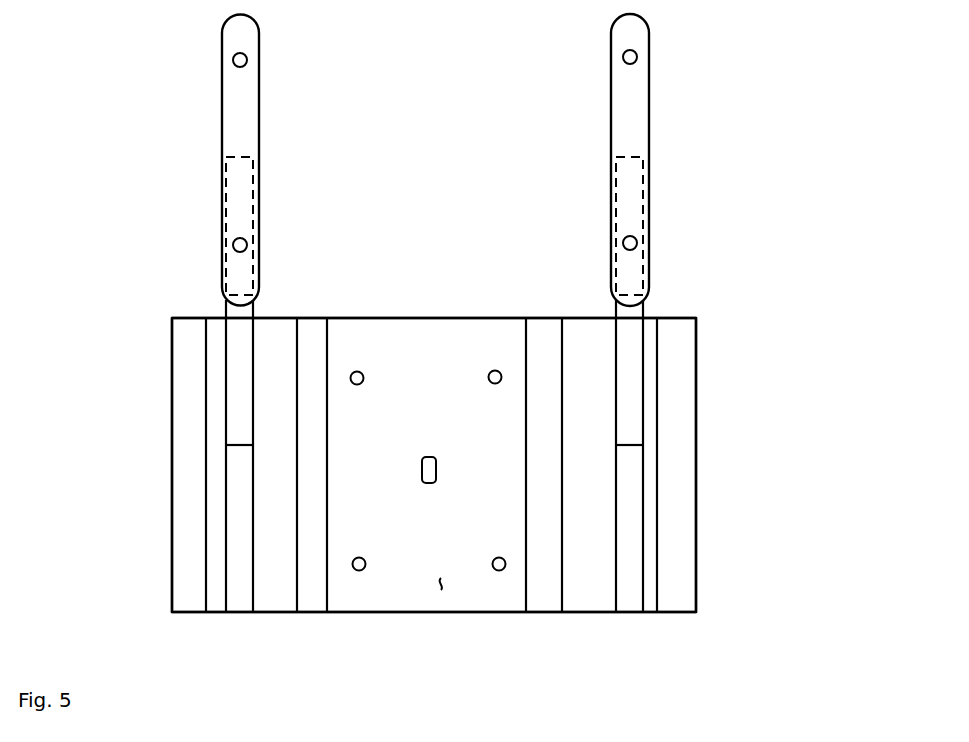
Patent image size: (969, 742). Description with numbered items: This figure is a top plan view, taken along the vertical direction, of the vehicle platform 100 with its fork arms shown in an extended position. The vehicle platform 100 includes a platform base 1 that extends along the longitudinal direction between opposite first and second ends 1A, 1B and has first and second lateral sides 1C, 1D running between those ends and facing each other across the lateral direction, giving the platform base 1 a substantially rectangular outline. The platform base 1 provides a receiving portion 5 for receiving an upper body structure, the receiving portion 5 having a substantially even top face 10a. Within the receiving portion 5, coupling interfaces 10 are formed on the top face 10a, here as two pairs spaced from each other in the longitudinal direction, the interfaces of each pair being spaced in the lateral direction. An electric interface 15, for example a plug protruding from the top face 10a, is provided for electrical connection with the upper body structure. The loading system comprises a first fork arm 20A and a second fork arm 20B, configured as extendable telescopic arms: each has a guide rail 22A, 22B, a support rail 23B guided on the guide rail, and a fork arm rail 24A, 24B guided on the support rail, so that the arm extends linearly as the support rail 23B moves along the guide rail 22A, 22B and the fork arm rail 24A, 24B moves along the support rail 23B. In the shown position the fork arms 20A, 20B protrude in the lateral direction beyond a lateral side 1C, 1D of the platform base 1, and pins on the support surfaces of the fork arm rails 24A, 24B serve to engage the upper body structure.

The vehicle platform 100 is at (699, 184).
The platform base 1 is at (170, 388).
The first end 1A is at (698, 525).
The second end 1B is at (170, 474).
The first lateral side 1C is at (422, 612).
The second lateral side 1D is at (415, 318).
The receiving portion 5 is at (401, 376).
The coupling interfaces 10 is at (362, 384).
The top face 10a is at (441, 590).
The electric interface 15 is at (421, 470).
The first fork arm 20A is at (601, 222).
The second fork arm 20B is at (267, 226).
The guide rail 22A is at (628, 603).
The guide rail 22B is at (239, 587).
The support rail 23B is at (243, 332).
The fork arm rail 24A is at (618, 125).
The fork arm rail 24B is at (259, 117).